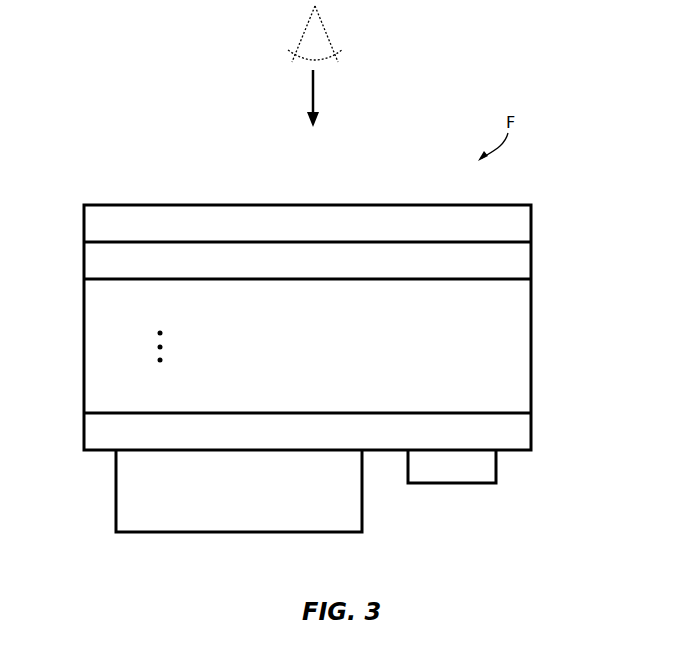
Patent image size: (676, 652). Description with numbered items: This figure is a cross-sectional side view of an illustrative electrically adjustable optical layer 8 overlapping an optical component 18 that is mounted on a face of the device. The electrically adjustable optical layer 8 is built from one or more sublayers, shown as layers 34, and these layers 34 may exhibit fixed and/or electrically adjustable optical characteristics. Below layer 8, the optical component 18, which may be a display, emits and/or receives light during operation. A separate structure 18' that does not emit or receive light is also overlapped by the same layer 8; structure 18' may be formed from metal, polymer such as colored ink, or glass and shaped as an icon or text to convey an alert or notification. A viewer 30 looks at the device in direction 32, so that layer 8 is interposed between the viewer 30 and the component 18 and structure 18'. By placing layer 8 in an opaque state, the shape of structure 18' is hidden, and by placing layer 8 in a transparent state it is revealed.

The electrically adjustable optical layer 8 is at (307, 327).
The optical component 18 is at (239, 517).
The structure 18' is at (452, 498).
The viewer 30 is at (318, 27).
The direction 32 is at (313, 97).
The layers 34 is at (524, 225).